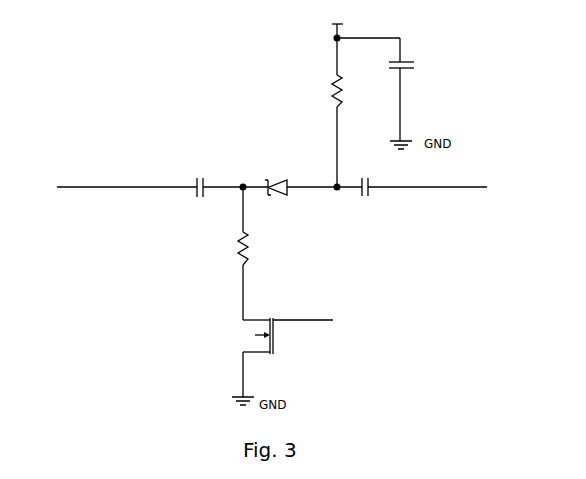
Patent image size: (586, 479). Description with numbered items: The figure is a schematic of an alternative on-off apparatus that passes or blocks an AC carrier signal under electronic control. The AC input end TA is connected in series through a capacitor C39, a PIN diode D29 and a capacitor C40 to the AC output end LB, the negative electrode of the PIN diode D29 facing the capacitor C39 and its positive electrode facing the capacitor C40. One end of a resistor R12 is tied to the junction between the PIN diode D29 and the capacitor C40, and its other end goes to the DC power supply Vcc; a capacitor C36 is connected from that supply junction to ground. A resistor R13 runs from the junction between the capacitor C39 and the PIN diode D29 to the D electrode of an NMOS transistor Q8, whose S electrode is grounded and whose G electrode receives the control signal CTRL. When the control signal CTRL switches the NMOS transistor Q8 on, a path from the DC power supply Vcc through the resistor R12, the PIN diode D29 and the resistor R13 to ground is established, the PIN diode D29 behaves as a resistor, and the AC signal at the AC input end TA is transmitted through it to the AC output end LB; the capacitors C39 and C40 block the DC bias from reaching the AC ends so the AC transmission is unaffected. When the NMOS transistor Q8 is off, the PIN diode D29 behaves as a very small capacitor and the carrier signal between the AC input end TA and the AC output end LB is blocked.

The resistor R12 is at (317, 131).
The capacitor C36 is at (418, 93).
The capacitor C39 is at (199, 177).
The PIN diode D29 is at (277, 176).
The capacitor C40 is at (365, 198).
The resistor R13 is at (258, 253).
The NMOS transistor Q8 is at (263, 361).
The DC power supply Vcc is at (362, 39).
The AC input end TA is at (127, 176).
The AC output end LB is at (427, 176).
The control signal CTRL is at (321, 321).